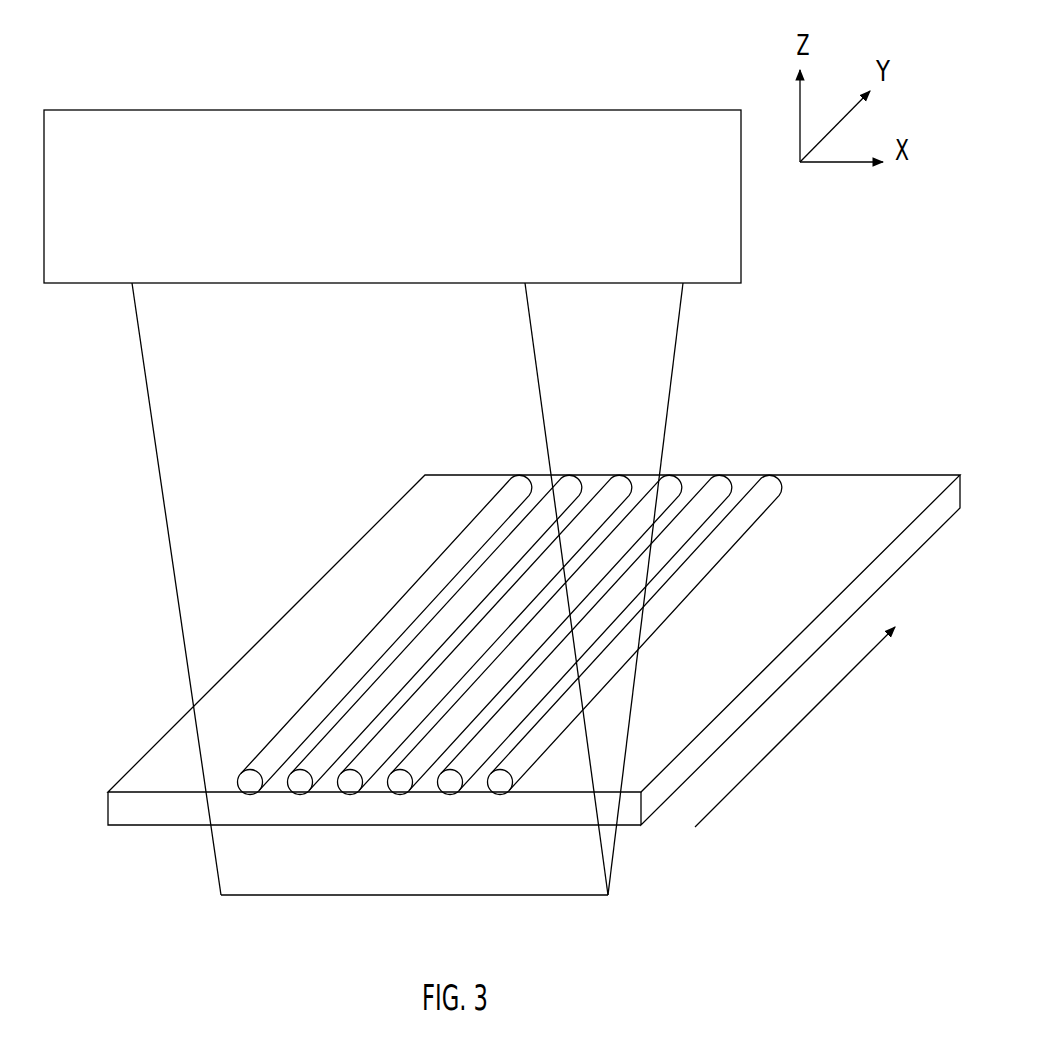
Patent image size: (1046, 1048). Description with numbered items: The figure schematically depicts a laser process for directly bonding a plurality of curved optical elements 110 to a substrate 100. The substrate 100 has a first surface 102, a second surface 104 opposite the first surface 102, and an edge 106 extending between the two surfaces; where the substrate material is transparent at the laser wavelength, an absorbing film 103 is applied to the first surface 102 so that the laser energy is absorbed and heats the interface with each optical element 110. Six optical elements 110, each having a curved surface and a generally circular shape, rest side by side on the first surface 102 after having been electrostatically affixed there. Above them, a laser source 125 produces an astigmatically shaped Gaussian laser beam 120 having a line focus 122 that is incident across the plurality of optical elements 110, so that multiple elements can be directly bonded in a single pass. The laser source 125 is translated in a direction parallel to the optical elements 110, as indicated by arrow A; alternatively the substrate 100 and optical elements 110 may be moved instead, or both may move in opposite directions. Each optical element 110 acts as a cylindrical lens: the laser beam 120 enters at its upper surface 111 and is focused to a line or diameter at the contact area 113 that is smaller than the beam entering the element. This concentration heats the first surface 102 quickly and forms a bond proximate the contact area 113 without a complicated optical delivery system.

The substrate 100 is at (508, 724).
The first surface 102 is at (509, 695).
The absorbing film 103 is at (509, 695).
The second surface 104 is at (633, 827).
The edge 106 is at (374, 808).
The optical element 110 is at (510, 724).
The upper surface 111 is at (510, 671).
The contact area 113 is at (300, 795).
The laser beam 120 is at (378, 618).
The line focus 122 is at (241, 897).
The laser source 125 is at (101, 82).
The arrow A is at (780, 743).